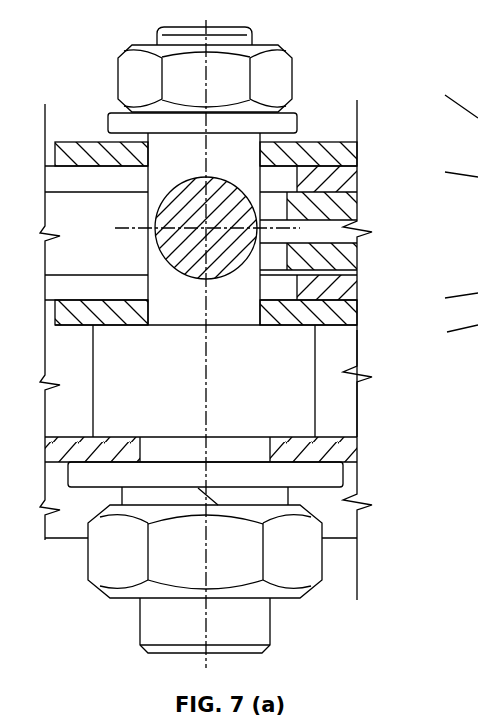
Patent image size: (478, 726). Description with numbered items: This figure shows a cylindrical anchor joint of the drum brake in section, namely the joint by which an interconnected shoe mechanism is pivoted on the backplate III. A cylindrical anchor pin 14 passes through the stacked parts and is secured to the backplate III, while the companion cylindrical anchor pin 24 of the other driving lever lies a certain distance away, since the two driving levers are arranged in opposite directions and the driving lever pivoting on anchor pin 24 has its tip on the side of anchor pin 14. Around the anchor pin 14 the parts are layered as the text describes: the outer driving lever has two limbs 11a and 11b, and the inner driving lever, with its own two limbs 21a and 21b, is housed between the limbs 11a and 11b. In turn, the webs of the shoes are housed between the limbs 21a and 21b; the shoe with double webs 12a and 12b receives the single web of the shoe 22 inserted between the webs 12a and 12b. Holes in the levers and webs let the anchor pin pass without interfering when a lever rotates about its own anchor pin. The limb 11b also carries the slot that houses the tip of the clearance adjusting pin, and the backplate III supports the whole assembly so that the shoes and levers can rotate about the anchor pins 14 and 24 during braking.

The limb of driving lever 11 11a is at (338, 141).
The limb of driving lever 21 21a is at (340, 180).
The web of shoe 12 12a is at (340, 208).
The shoe 22 is at (477, 235).
The web of shoe 12 12b is at (333, 275).
The limb of driving lever 21 21b is at (340, 288).
The limb of driving lever 11 11b is at (332, 321).
The cylindrical anchor pin 24 is at (477, 395).
The cylindrical anchor pin 14 is at (277, 381).
The backplate III is at (477, 470).